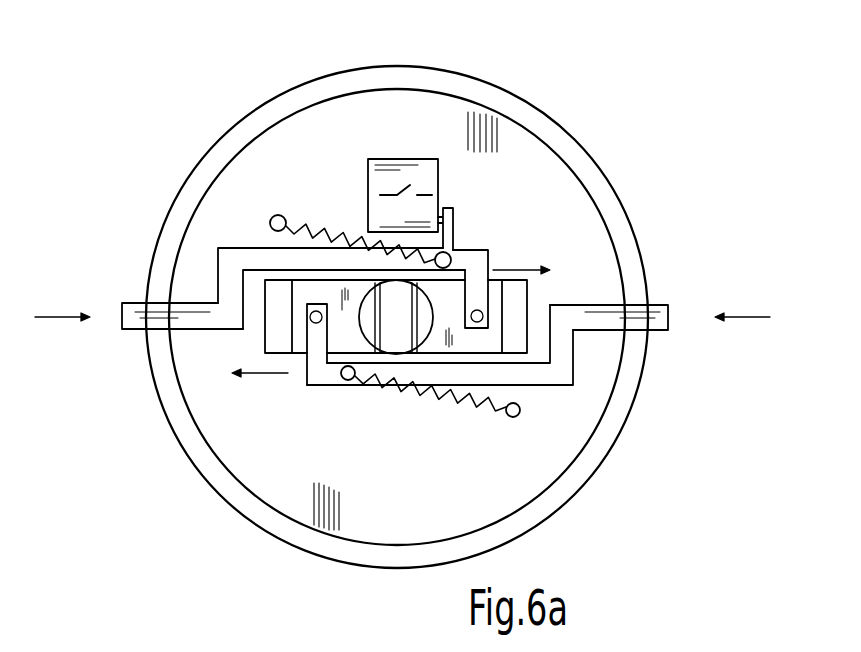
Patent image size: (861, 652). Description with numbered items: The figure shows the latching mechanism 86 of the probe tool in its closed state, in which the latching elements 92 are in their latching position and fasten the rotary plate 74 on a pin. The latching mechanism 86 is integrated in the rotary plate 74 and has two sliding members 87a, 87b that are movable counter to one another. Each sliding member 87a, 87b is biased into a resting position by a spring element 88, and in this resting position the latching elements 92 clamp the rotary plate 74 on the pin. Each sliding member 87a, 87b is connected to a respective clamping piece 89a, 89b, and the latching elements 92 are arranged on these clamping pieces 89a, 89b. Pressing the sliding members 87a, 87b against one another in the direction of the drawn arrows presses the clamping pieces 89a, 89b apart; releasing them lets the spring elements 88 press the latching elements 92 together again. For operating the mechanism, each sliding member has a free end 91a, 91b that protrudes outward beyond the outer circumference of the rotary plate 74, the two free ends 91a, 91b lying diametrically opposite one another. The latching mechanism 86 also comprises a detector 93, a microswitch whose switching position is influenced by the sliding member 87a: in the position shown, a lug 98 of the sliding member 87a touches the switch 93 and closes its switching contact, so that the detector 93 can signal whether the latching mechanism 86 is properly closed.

The rotary plate 74 is at (330, 152).
The latching mechanism 86 is at (545, 195).
The sliding member 87a is at (230, 260).
The sliding member 87b is at (562, 367).
The spring element 88 is at (305, 222).
The clamping piece 89a is at (293, 335).
The clamping piece 89b is at (487, 338).
The free end 91a is at (133, 303).
The free end 91b is at (658, 303).
The latching element 92 is at (417, 328).
The detector 93 is at (410, 158).
The lug 98 is at (455, 217).